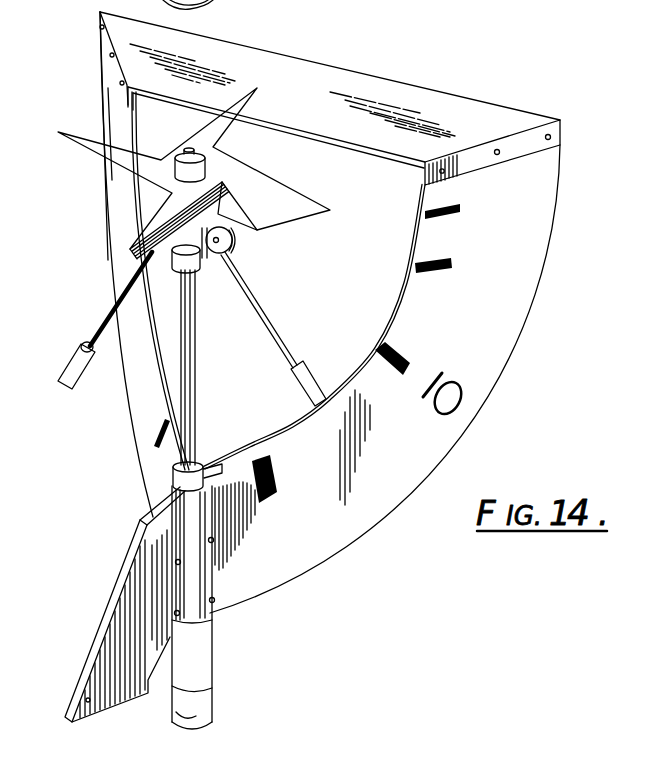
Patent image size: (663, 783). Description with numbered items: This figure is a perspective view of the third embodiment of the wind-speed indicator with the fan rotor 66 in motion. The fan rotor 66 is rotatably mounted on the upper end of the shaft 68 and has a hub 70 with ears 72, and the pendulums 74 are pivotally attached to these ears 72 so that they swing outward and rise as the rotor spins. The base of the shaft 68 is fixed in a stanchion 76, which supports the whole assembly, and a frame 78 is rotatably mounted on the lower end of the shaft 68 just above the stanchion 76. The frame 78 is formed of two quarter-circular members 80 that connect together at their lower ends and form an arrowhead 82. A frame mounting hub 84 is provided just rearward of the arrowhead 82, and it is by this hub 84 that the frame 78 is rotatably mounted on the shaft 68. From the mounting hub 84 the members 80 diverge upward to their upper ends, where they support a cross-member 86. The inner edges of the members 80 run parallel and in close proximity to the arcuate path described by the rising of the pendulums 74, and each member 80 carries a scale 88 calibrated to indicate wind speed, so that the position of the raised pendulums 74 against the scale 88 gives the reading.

The fan rotor 66 is at (85, 137).
The shaft 68 is at (197, 372).
The hub 70 is at (206, 262).
The ears 72 is at (232, 242).
The pendulums 74 is at (97, 326).
The stanchion 76 is at (204, 708).
The frame 78 is at (567, 118).
The quarter-circular members 80 is at (107, 218).
The arrowhead 82 is at (110, 657).
The frame mounting hub 84 is at (199, 464).
The cross-member 86 is at (330, 80).
The scale 88 is at (407, 283).